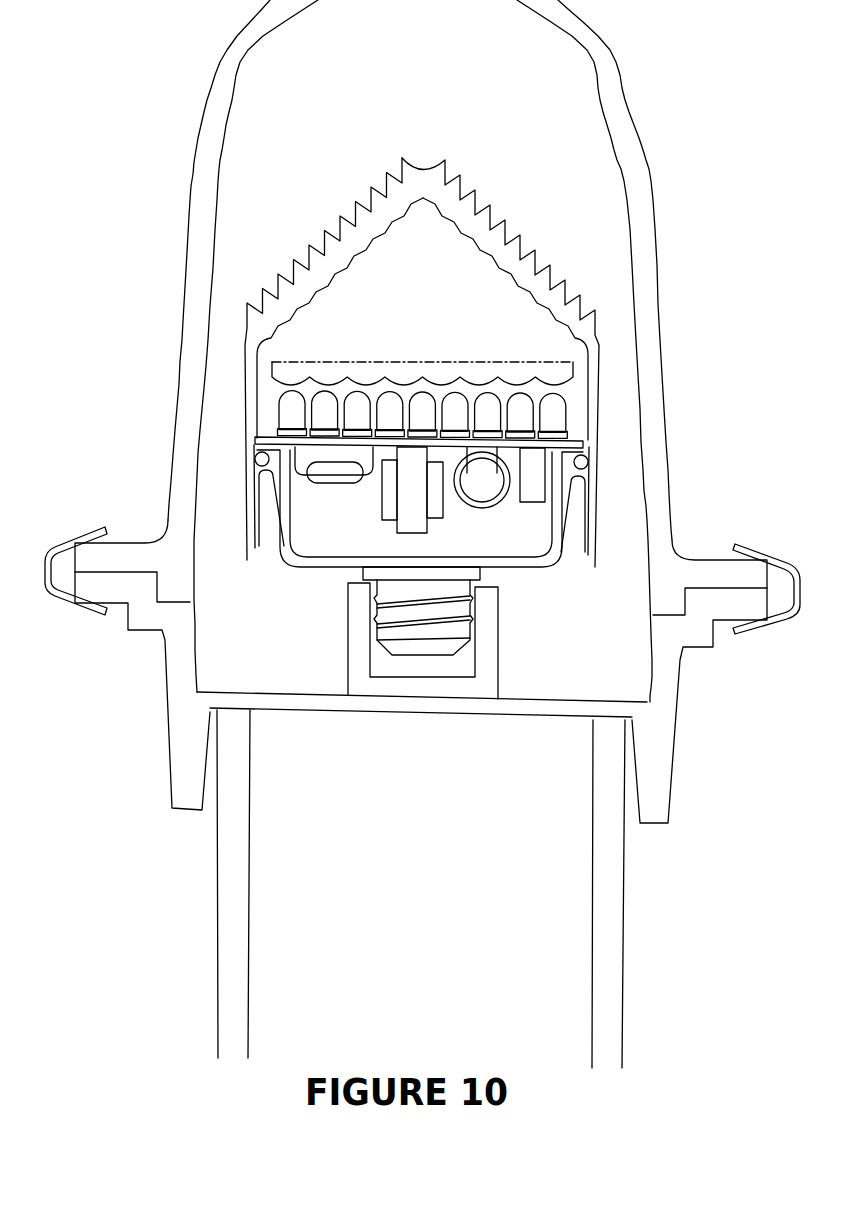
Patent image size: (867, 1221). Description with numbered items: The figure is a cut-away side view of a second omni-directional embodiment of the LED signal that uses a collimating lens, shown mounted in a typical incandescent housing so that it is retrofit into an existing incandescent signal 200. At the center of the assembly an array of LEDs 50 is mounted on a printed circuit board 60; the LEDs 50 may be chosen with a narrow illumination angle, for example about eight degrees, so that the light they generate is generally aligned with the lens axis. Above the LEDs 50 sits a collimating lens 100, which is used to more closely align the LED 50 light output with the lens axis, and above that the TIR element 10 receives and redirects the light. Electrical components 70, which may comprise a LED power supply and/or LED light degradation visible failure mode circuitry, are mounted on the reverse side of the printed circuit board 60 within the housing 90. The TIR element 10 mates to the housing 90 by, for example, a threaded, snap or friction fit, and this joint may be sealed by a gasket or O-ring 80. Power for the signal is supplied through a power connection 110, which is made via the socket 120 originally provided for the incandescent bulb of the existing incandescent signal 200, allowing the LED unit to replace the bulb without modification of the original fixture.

The TIR element 10 is at (427, 185).
The LEDs 50 is at (556, 418).
The printed circuit board 60 is at (268, 437).
The electrical components 70 is at (440, 513).
The gasket or O-ring 80 is at (588, 463).
The housing 90 is at (545, 563).
The collimating lens 100 is at (565, 375).
The power connection 110 is at (465, 650).
The socket 120 is at (347, 658).
The existing incandescent signal 200 is at (675, 723).